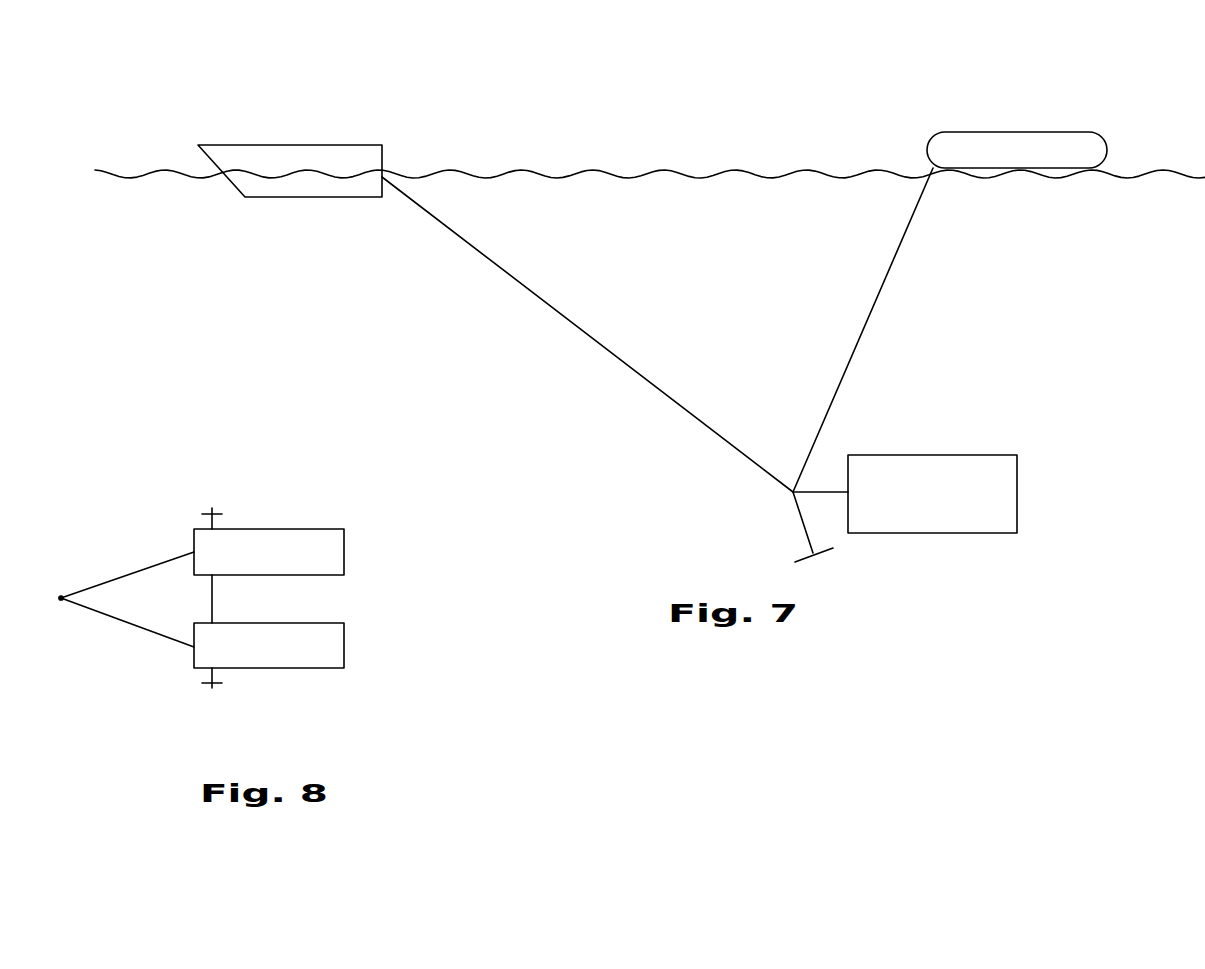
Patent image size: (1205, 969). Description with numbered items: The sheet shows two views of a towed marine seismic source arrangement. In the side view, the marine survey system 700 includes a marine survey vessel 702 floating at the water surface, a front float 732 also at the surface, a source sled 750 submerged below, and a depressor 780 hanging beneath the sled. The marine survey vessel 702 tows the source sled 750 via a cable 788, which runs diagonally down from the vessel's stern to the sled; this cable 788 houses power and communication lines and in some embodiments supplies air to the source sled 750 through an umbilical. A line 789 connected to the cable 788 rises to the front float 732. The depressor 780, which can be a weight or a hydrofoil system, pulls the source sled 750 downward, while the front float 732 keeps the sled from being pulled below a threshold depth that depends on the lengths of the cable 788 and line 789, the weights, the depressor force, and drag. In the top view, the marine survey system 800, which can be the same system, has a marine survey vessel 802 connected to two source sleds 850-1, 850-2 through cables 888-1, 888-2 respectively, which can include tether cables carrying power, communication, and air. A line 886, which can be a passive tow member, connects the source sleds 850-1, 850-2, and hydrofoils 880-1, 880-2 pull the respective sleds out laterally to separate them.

In FIG. 7, the marine survey system 700 is at (902, 52).
In FIG. 7, the marine survey vessel 702 is at (272, 145).
In FIG. 7, the front float 732 is at (1031, 132).
In FIG. 7, the cable 788 is at (582, 331).
In FIG. 7, the line 789 is at (888, 272).
In FIG. 7, the source sled 750 is at (935, 455).
In FIG. 7, the depressor 780 is at (802, 523).
In FIG. 8, the marine survey system 800 is at (300, 493).
In FIG. 8, the marine survey vessel 802 is at (61, 596).
In FIG. 8, the cable 888-1 is at (147, 568).
In FIG. 8, the cable 888-2 is at (125, 627).
In FIG. 8, the source sled 850-1 is at (344, 549).
In FIG. 8, the source sled 850-2 is at (344, 645).
In FIG. 8, the line 886 is at (212, 596).
In FIG. 8, the hydrofoil 880-1 is at (212, 508).
In FIG. 8, the hydrofoil 880-2 is at (212, 688).